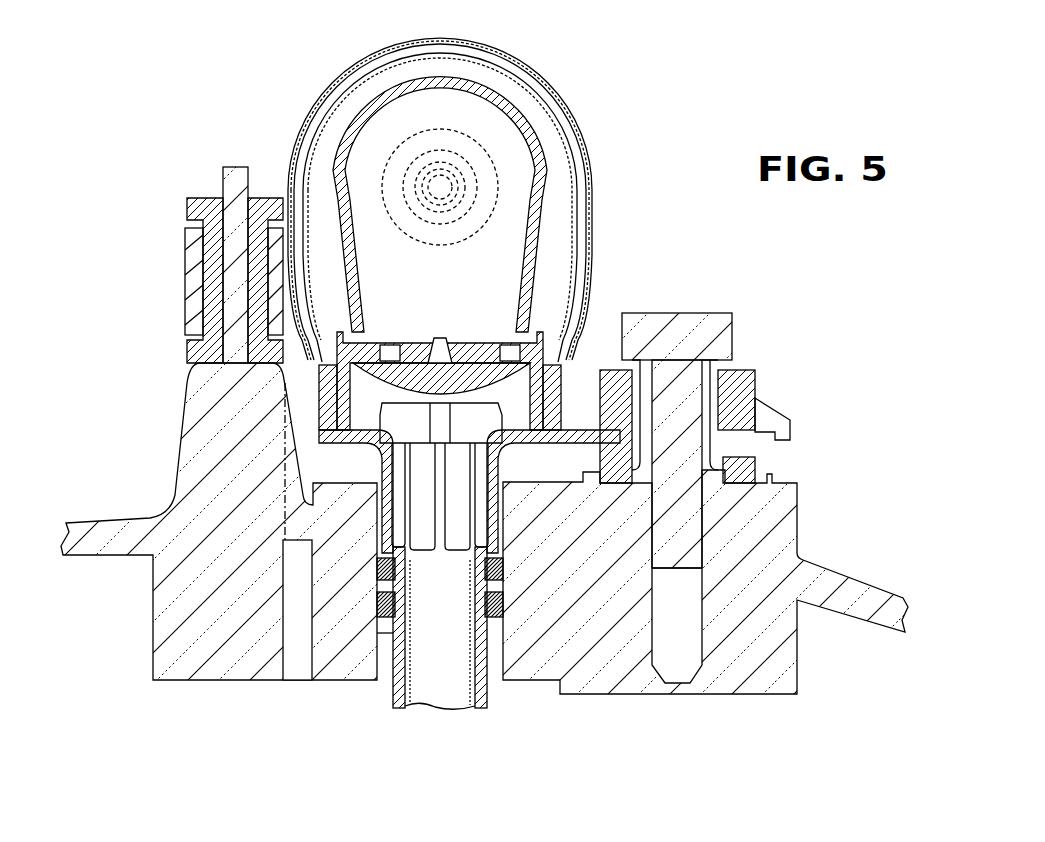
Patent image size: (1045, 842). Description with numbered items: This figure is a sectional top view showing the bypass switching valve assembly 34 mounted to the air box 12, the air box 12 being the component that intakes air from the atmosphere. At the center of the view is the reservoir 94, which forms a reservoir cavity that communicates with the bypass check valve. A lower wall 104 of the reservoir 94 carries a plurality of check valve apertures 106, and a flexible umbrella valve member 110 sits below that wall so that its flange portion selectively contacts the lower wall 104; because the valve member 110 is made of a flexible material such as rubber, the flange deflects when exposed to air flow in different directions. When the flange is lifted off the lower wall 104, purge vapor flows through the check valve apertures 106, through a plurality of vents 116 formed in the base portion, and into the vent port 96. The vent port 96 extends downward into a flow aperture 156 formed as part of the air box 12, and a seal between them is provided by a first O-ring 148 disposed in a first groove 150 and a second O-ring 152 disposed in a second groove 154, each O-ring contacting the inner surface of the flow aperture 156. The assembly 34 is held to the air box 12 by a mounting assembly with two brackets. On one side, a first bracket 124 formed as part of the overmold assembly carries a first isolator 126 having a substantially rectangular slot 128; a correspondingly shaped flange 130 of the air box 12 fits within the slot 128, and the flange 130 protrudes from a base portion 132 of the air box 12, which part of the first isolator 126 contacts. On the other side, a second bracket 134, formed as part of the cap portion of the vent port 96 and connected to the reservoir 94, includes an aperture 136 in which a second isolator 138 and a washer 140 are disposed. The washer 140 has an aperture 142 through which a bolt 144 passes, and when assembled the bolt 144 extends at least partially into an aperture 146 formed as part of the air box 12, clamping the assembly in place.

The air box 12 is at (187, 620).
The bypass switching valve assembly 34 is at (508, 198).
The reservoir 94 is at (588, 157).
The vent port 96 is at (488, 695).
The lower wall 104 is at (441, 350).
The check valve apertures 106 is at (416, 358).
The umbrella valve member 110 is at (500, 350).
The vents 116 is at (455, 552).
The first bracket 124 is at (193, 262).
The first isolator 126 is at (212, 235).
The slot 128 is at (232, 300).
The flange 130 is at (240, 168).
The base portion 132 is at (197, 390).
The second bracket 134 is at (583, 372).
The aperture 136 is at (800, 437).
The second isolator 138 is at (735, 470).
The washer 140 is at (628, 390).
The aperture 142 is at (690, 375).
The bolt 144 is at (712, 318).
The aperture 146 is at (700, 603).
The first O-ring 148 is at (497, 568).
The first groove 150 is at (382, 568).
The second O-ring 152 is at (500, 605).
The second groove 154 is at (385, 605).
The flow aperture 156 is at (388, 650).